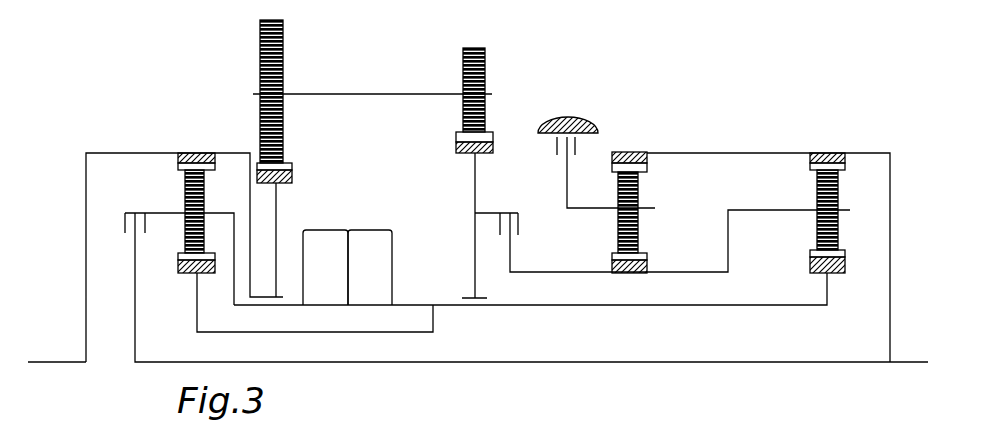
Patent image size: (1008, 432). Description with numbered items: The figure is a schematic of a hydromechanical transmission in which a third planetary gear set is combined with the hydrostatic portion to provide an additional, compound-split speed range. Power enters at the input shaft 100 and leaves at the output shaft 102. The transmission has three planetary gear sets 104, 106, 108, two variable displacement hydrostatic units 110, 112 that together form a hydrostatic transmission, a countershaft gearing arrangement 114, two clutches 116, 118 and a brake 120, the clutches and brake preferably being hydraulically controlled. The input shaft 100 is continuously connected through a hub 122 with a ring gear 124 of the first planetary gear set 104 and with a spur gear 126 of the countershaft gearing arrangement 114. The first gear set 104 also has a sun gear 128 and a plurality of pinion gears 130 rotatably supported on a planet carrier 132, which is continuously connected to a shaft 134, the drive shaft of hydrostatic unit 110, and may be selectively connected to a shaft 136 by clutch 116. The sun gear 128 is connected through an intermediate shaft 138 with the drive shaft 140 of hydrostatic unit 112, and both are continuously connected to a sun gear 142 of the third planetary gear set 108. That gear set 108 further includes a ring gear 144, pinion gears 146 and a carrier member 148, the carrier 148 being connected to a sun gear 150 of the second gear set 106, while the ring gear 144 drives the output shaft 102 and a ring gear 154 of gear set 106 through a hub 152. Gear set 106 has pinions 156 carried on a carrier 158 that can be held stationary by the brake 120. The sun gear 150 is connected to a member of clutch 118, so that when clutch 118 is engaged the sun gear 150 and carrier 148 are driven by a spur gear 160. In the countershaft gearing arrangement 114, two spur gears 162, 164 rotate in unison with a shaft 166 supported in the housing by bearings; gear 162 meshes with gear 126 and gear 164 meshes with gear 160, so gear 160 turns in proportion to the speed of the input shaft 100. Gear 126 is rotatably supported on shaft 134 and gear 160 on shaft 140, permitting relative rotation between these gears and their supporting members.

The input shaft 100 is at (35, 362).
The output shaft 102 is at (902, 364).
The planetary gear set 104 is at (172, 218).
The planetary gear set 106 is at (654, 192).
The planetary gear set 108 is at (819, 217).
The hydrostatic unit 110 is at (325, 240).
The hydrostatic unit 112 is at (373, 237).
The countershaft gearing arrangement 114 is at (394, 158).
The clutch 116 is at (128, 243).
The clutch 118 is at (522, 227).
The brake 120 is at (572, 111).
The hub 122 is at (86, 253).
The ring gear 124 is at (183, 153).
The spur gear 126 is at (288, 173).
The sun gear 128 is at (185, 275).
The pinion gears 130 is at (183, 230).
The planet carrier 132 is at (210, 213).
The shaft 134 is at (288, 305).
The shaft 136 is at (432, 363).
The intermediate shaft 138 is at (358, 333).
The drive shaft 140 is at (403, 303).
The sun gear 142 is at (833, 273).
The ring gear 144 is at (810, 160).
The pinion gears 146 is at (848, 185).
The carrier member 148 is at (792, 213).
The sun gear 150 is at (648, 262).
The hub 152 is at (892, 268).
The ring gear 154 is at (622, 152).
The pinions 156 is at (638, 197).
The carrier 158 is at (576, 211).
The spur gear 160 is at (455, 150).
The spur gear 162 is at (302, 158).
The spur gear 164 is at (478, 72).
The shaft 166 is at (383, 93).